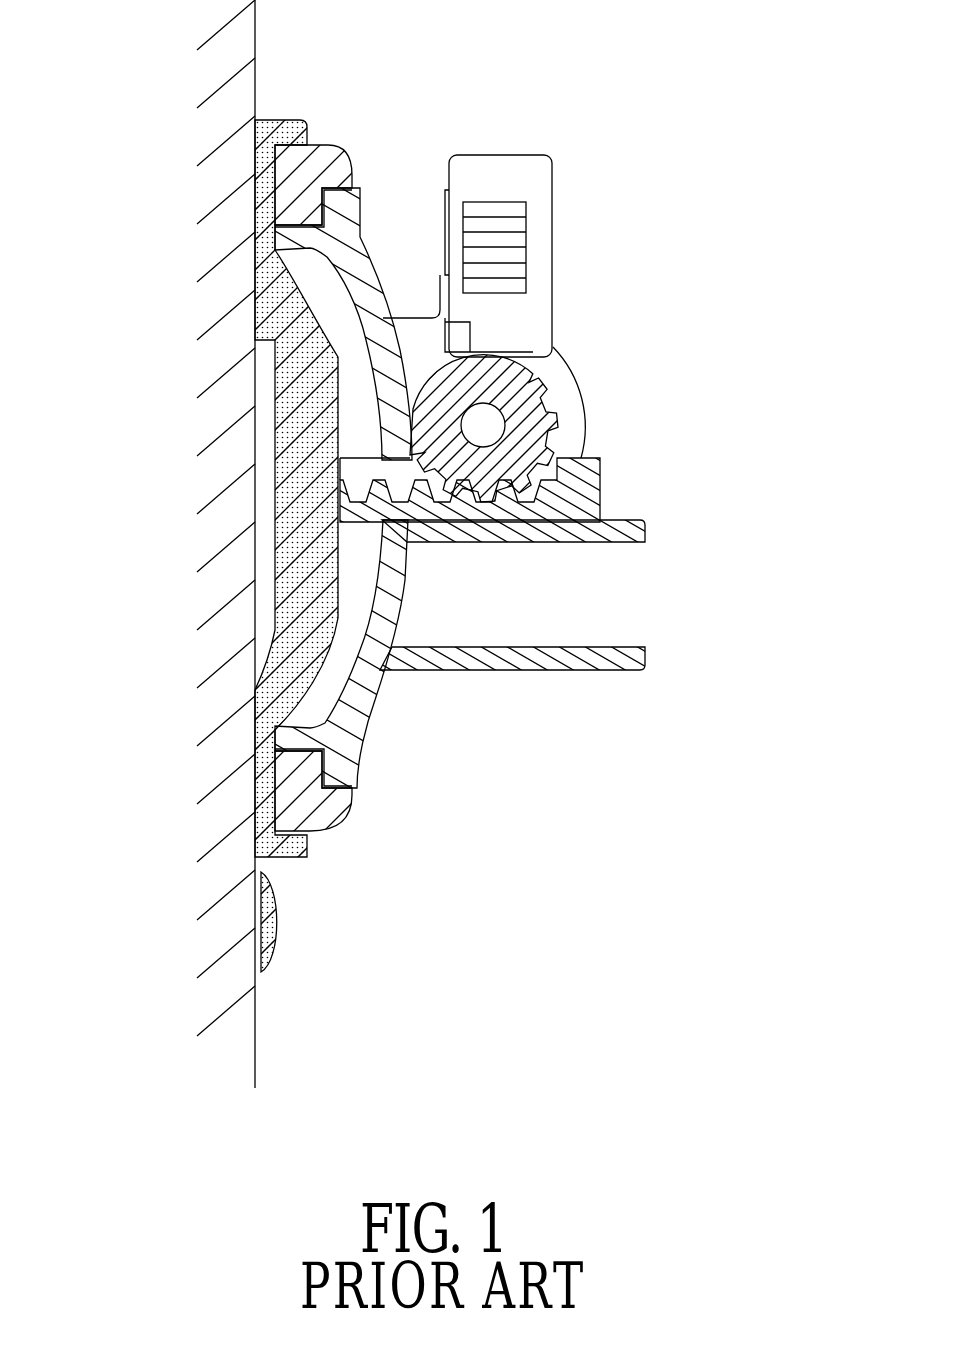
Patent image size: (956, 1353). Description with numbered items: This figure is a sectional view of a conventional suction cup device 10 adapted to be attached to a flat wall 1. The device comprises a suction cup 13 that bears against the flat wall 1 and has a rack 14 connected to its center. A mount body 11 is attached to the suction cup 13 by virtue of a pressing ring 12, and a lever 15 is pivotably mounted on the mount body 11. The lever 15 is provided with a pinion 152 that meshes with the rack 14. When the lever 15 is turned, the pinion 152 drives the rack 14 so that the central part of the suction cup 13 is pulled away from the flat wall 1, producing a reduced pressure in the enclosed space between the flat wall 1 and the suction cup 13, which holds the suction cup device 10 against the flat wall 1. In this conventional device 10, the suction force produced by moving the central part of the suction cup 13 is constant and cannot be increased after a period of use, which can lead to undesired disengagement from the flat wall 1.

The flat wall 1 is at (245, 36).
The suction cup device 10 is at (738, 340).
The mount body 11 is at (365, 697).
The pressing ring 12 is at (335, 815).
The suction cup 13 is at (298, 568).
The rack 14 is at (580, 488).
The lever 15 is at (565, 357).
The pinion 152 is at (551, 453).